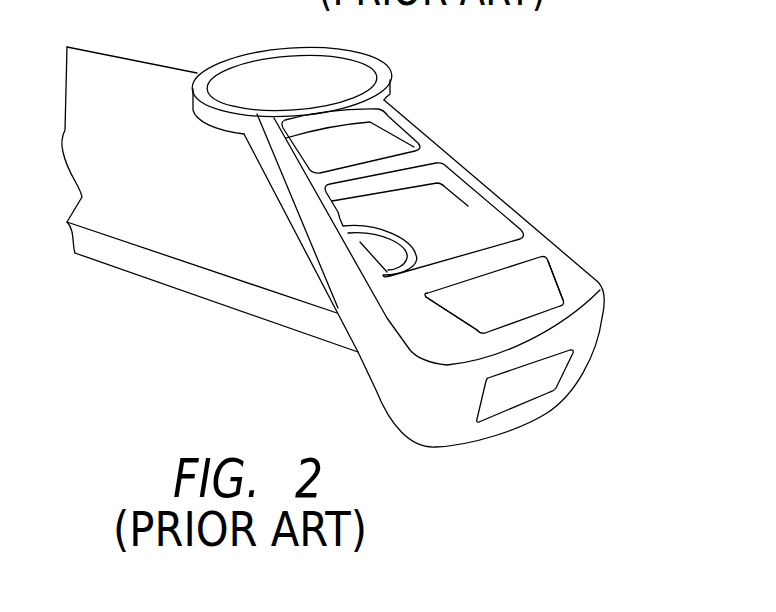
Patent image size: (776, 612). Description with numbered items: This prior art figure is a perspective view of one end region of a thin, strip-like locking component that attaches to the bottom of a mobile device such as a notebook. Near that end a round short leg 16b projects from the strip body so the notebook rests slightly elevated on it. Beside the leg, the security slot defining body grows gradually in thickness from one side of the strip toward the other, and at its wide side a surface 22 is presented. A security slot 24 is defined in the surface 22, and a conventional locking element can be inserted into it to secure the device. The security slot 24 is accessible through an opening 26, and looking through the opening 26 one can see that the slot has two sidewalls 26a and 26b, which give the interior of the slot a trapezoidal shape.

The short leg 16b is at (327, 73).
The surface 22 is at (583, 338).
The security slot 24 is at (522, 387).
The opening 26 is at (517, 262).
The sidewall 26a is at (553, 277).
The sidewall 26b is at (453, 313).